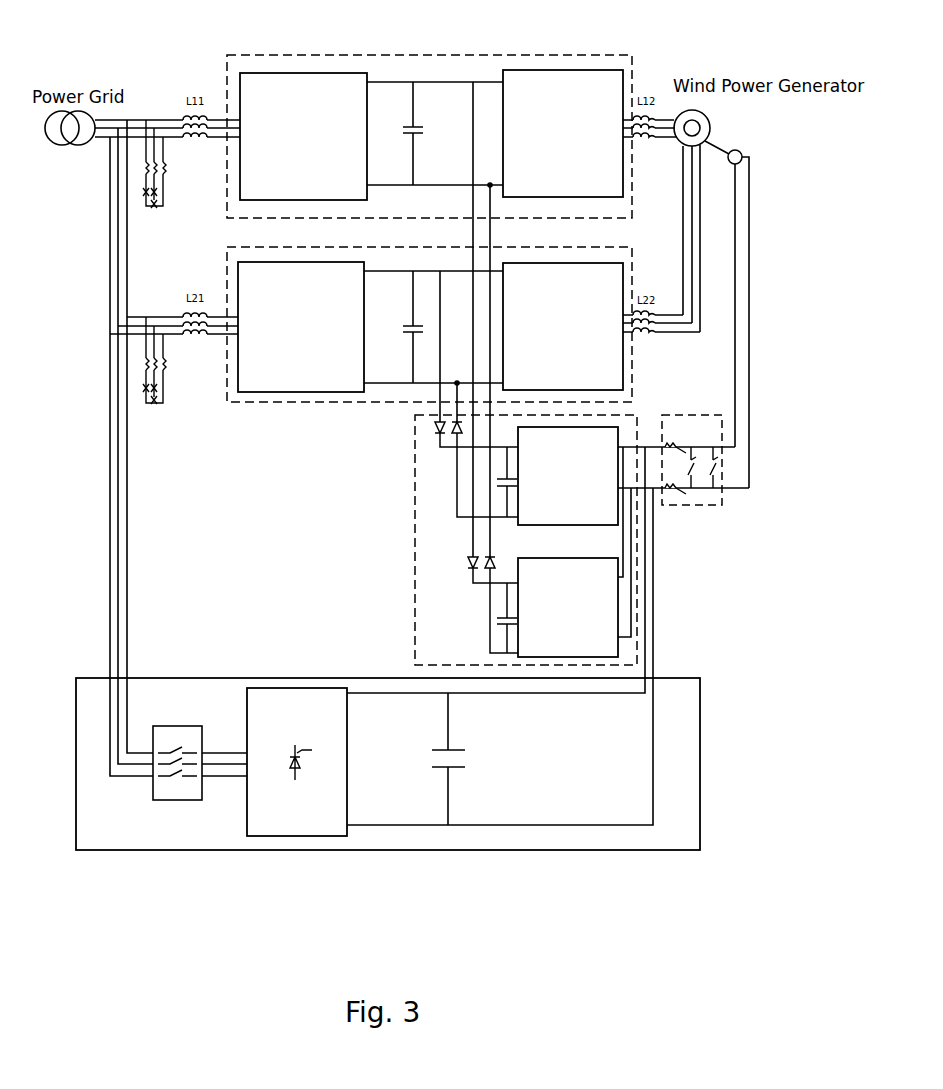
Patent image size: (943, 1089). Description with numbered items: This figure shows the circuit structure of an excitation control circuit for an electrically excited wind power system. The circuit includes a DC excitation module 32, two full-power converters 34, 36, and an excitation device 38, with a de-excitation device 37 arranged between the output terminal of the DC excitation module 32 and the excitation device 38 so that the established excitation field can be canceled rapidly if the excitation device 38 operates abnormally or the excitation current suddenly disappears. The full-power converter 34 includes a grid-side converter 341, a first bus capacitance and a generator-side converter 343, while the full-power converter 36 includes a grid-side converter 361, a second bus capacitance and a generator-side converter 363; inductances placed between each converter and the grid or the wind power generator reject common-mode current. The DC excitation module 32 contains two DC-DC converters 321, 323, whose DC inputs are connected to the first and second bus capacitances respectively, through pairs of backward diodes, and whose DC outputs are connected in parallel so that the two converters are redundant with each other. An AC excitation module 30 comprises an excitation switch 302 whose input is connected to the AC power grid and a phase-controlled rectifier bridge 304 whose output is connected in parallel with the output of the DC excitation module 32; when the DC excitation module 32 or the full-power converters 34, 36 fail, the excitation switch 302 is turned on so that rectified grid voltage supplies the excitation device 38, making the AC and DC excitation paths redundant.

The AC excitation module 30 is at (271, 676).
The excitation switch 302 is at (177, 725).
The phase-controlled rectifier bridge 304 is at (347, 758).
The DC excitation module 32 is at (414, 559).
The DC-DC converter 321 is at (568, 476).
The DC-DC converter 323 is at (568, 607).
The full-power converter 34 is at (405, 54).
The grid-side converter 341 is at (303, 136).
The generator-side converter 343 is at (563, 133).
The full-power converter 36 is at (330, 402).
The grid-side converter 361 is at (301, 327).
The generator-side converter 363 is at (563, 326).
The de-excitation device 37 is at (693, 415).
The excitation device 38 is at (731, 165).